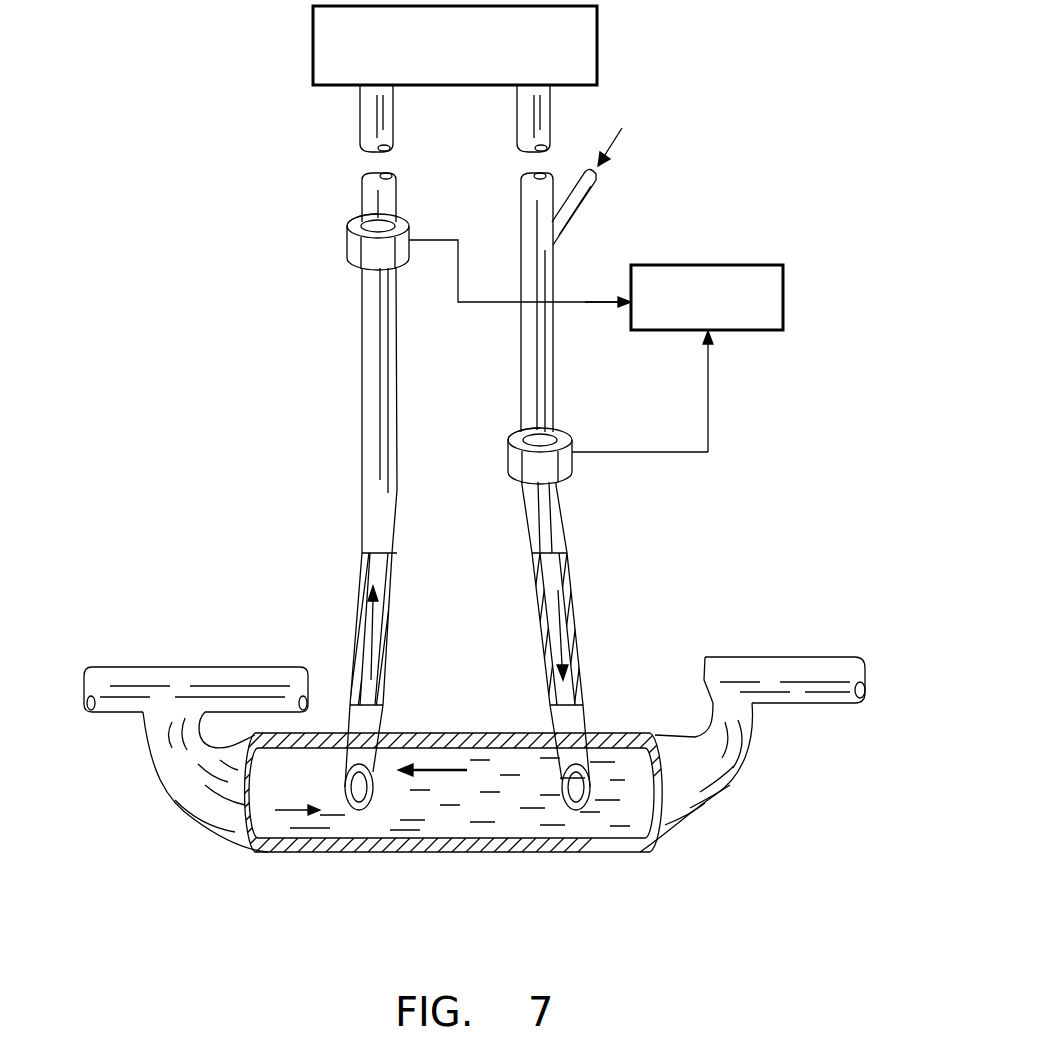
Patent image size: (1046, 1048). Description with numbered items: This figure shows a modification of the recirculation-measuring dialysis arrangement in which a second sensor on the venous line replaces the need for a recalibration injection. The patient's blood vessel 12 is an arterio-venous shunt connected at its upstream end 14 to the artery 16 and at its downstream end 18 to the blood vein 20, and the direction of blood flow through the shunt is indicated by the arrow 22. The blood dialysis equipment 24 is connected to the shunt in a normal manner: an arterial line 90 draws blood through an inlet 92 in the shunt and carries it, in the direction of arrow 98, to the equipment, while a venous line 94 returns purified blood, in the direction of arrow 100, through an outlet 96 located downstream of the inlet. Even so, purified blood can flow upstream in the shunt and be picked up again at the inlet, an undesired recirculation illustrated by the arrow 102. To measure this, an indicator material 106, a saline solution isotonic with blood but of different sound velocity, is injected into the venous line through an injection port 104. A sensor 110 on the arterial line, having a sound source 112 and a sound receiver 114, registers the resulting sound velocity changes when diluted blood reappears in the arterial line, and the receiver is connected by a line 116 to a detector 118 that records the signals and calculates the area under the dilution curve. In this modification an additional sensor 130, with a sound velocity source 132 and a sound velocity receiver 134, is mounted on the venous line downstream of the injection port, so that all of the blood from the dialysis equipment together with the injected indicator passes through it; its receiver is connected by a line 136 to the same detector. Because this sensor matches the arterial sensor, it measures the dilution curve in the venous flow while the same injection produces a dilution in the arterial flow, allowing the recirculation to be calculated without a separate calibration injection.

The blood vessel 12 is at (228, 848).
The upstream end 14 is at (143, 752).
The artery 16 is at (198, 667).
The downstream end 18 is at (750, 755).
The blood vein 20 is at (762, 657).
The arrow 22 is at (312, 820).
The blood dialysis equipment 24 is at (598, 45).
The arterial line 90 is at (363, 345).
The inlet 92 is at (365, 806).
The venous line 94 is at (555, 405).
The outlet 96 is at (583, 806).
The arrow 98 is at (357, 633).
The arrow 100 is at (572, 610).
The arrow 102 is at (438, 772).
The injection port 104 is at (582, 205).
The indicator material 106 is at (627, 140).
The sensor 110 is at (343, 265).
The sound source 112 is at (350, 222).
The sound receiver 114 is at (412, 226).
The line 116 is at (597, 305).
The detector 118 is at (700, 265).
The additional sensor 130 is at (583, 480).
The sound velocity source 132 is at (512, 432).
The sound velocity receiver 134 is at (574, 430).
The line 136 is at (673, 455).